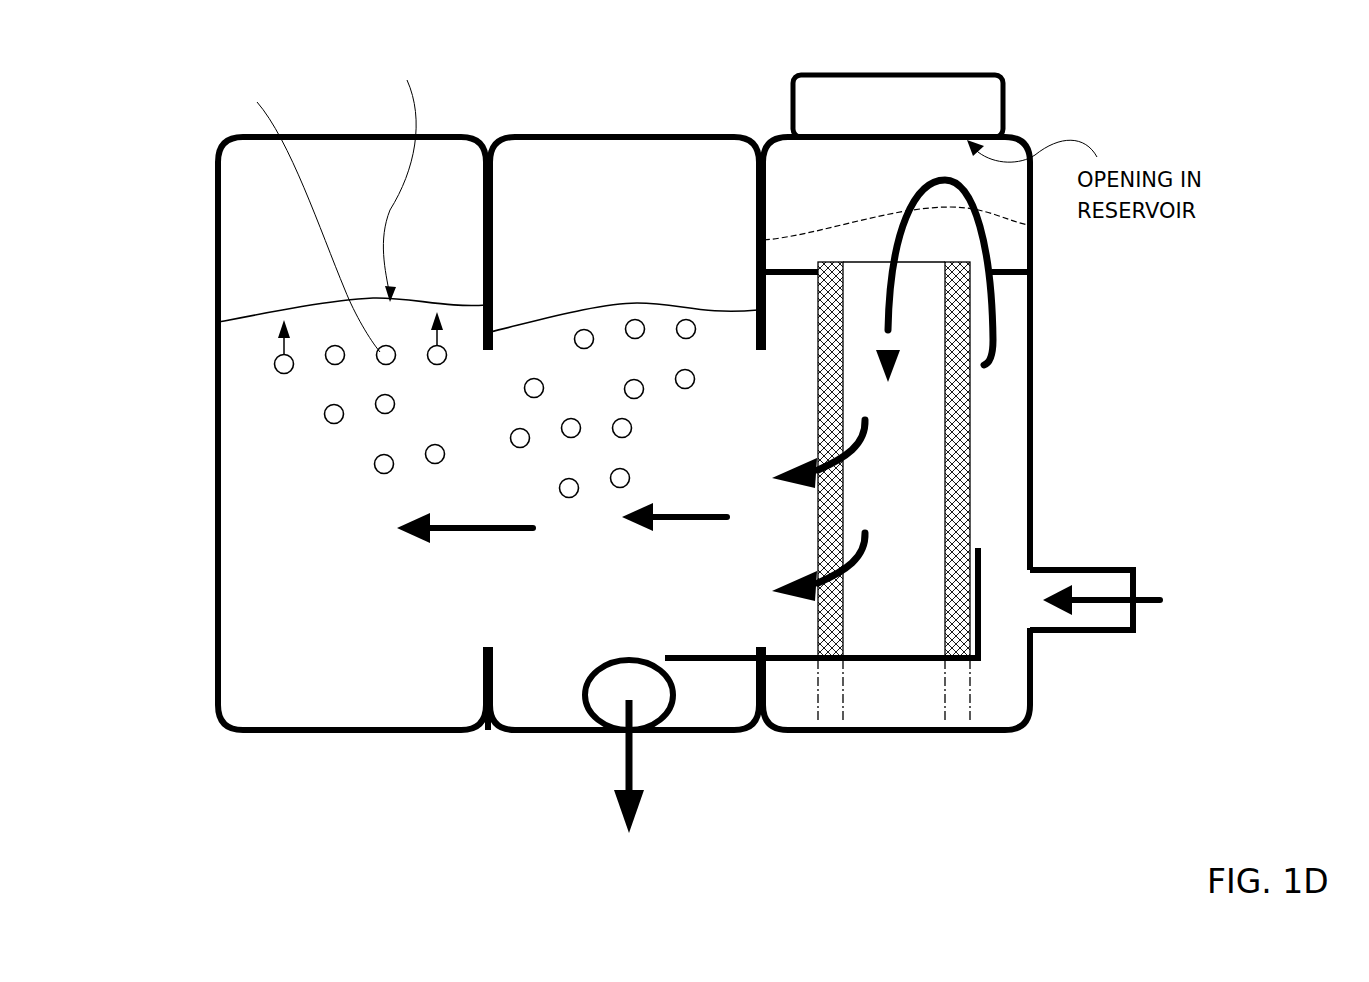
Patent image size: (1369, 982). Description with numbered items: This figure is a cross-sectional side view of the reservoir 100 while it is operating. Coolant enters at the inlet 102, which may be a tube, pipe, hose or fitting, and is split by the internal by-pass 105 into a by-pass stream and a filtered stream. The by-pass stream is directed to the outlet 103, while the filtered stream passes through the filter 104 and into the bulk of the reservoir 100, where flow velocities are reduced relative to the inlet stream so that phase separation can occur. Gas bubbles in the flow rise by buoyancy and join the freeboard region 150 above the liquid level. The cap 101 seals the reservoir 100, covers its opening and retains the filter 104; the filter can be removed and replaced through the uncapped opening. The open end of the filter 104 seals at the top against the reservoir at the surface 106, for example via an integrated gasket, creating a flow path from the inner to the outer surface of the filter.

The reservoir 100 is at (1313, 301).
The cap 101 is at (1003, 93).
The inlet 102 is at (1082, 568).
The outlet 103 is at (650, 693).
The filter 104 is at (972, 452).
The by-pass 105 is at (990, 722).
The surface 106 is at (1005, 275).
The freeboard region 150 is at (808, 158).